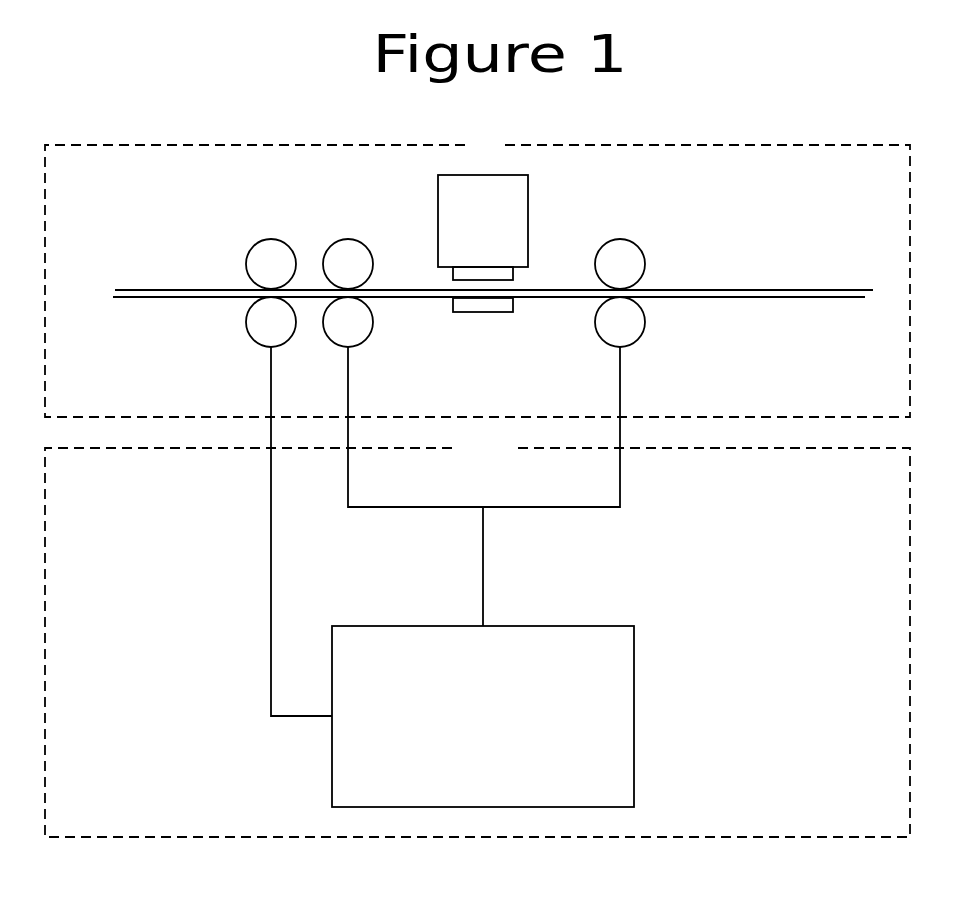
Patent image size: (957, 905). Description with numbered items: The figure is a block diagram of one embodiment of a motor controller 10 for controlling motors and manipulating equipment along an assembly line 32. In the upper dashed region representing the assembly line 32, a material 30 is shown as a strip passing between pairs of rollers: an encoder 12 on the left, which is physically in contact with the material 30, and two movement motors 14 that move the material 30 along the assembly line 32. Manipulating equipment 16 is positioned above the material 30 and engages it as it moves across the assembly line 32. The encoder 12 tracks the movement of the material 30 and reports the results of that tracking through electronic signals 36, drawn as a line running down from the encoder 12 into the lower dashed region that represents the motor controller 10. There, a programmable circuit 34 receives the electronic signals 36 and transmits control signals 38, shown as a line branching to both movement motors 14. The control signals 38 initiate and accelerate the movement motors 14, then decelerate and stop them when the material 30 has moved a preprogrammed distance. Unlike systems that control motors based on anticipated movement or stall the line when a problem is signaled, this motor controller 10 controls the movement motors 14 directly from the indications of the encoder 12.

The motor controller 10 is at (477, 636).
The encoder 12 is at (271, 293).
The movement motors 14 is at (484, 293).
The manipulating equipment 16 is at (483, 243).
The material 30 is at (493, 280).
The assembly line 32 is at (477, 275).
The programmable circuit 34 is at (483, 716).
The electronic signals 36 is at (287, 531).
The control signals 38 is at (484, 486).